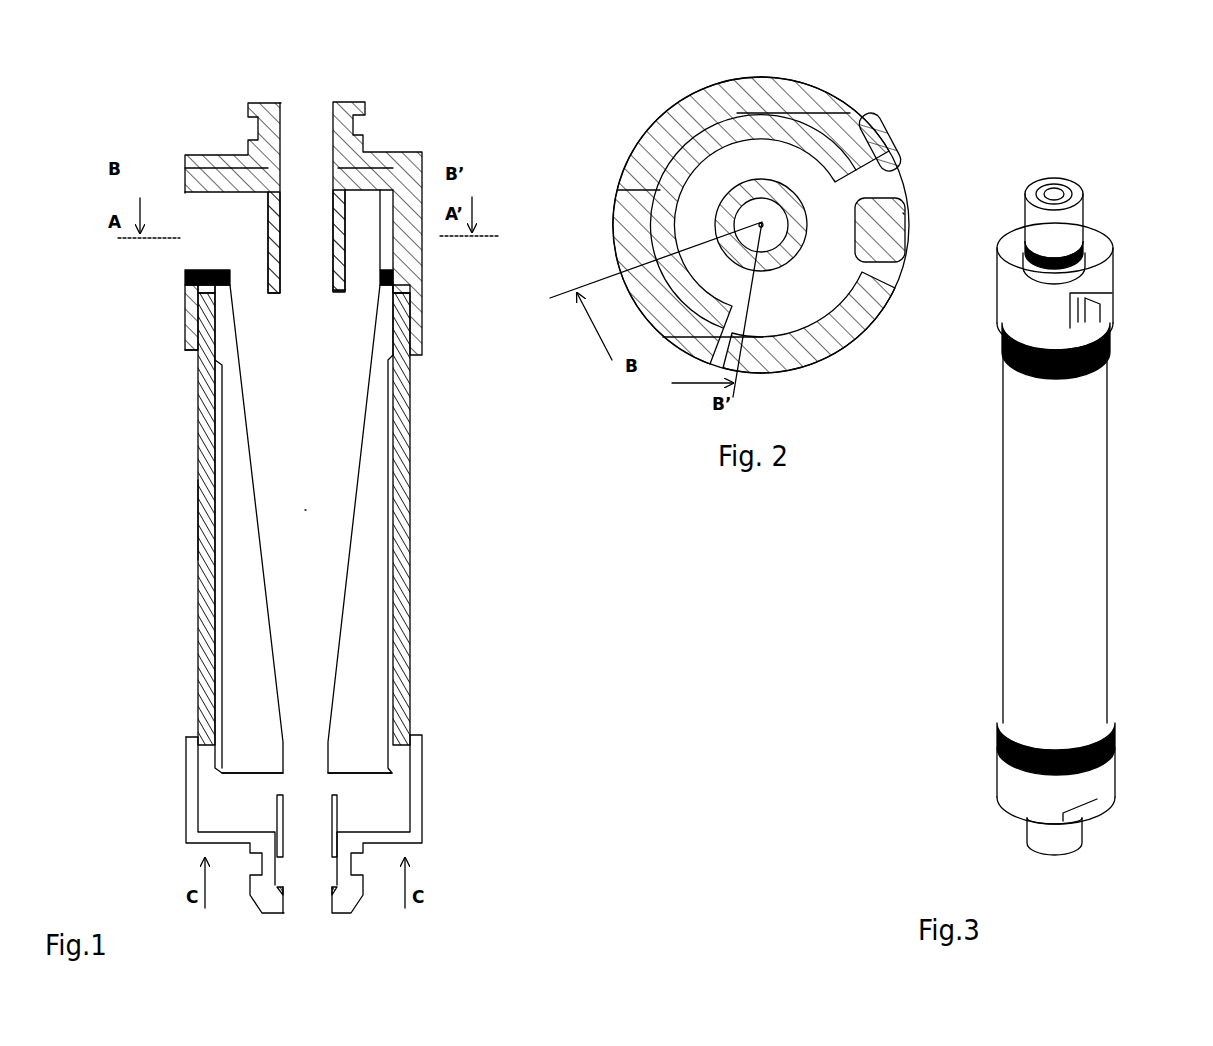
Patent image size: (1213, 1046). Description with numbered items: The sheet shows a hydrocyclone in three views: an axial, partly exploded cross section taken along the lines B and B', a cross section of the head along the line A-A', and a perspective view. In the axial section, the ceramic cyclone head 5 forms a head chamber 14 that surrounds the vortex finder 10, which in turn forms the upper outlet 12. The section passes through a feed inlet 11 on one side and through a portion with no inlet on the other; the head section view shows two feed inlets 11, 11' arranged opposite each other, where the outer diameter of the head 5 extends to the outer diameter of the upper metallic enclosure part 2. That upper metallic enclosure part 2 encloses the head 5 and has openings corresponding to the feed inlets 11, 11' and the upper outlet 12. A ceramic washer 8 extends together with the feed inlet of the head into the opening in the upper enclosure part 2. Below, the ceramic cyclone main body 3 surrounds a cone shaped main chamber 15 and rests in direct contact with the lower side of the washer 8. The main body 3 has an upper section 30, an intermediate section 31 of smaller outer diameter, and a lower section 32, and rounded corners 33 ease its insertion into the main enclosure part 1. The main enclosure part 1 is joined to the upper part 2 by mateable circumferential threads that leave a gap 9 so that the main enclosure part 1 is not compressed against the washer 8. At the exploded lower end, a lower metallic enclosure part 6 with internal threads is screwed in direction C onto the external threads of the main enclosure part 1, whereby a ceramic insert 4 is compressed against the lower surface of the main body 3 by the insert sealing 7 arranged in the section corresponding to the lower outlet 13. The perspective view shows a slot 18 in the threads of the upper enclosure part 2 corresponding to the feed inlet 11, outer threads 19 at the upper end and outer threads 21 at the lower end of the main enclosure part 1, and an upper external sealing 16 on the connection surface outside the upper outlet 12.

In FIG. 1, the main enclosure part 1 is at (199, 473).
In FIG. 3, the main enclosure part 1 is at (1030, 527).
In FIG. 1, the upper metallic enclosure part 2 is at (248, 152).
In FIG. 2, the upper metallic enclosure part 2 is at (845, 322).
In FIG. 1, the cyclone main body 3 is at (304, 529).
In FIG. 1, the ceramic insert 4 is at (336, 817).
In FIG. 1, the cyclone head 5 is at (268, 215).
In FIG. 2, the cyclone head 5 is at (735, 202).
In FIG. 1, the lower metallic enclosure part 6 is at (198, 803).
In FIG. 3, the lower metallic enclosure part 6 is at (1015, 797).
In FIG. 1, the insert sealing 7 is at (280, 892).
In FIG. 1, the ceramic washer 8 is at (185, 272).
In FIG. 1, the gap 9 is at (195, 287).
In FIG. 1, the vortex finder 10 is at (323, 285).
In FIG. 1, the feed inlet 11 is at (108, 180).
In FIG. 2, the feed inlet 11 is at (724, 225).
In FIG. 3, the feed inlet 11 is at (1087, 284).
In FIG. 2, the feed inlet 11' is at (944, 165).
In FIG. 1, the upper outlet 12 is at (303, 127).
In FIG. 2, the upper outlet 12 is at (758, 205).
In FIG. 3, the upper outlet 12 is at (1053, 190).
In FIG. 1, the lower outlet 13 is at (302, 888).
In FIG. 1, the head chamber 14 is at (367, 225).
In FIG. 2, the head chamber 14 is at (830, 230).
In FIG. 1, the main chamber 15 is at (305, 510).
In FIG. 3, the upper external sealing 16 is at (1075, 245).
In FIG. 3, the slot 18 is at (1068, 322).
In FIG. 3, the outer threads 19 is at (1035, 363).
In FIG. 3, the outer threads 21 is at (1000, 745).
In FIG. 1, the upper section 30 is at (205, 330).
In FIG. 1, the intermediate section 31 is at (205, 515).
In FIG. 1, the lower section 32 is at (242, 737).
In FIG. 1, the rounded corners 33 is at (392, 772).